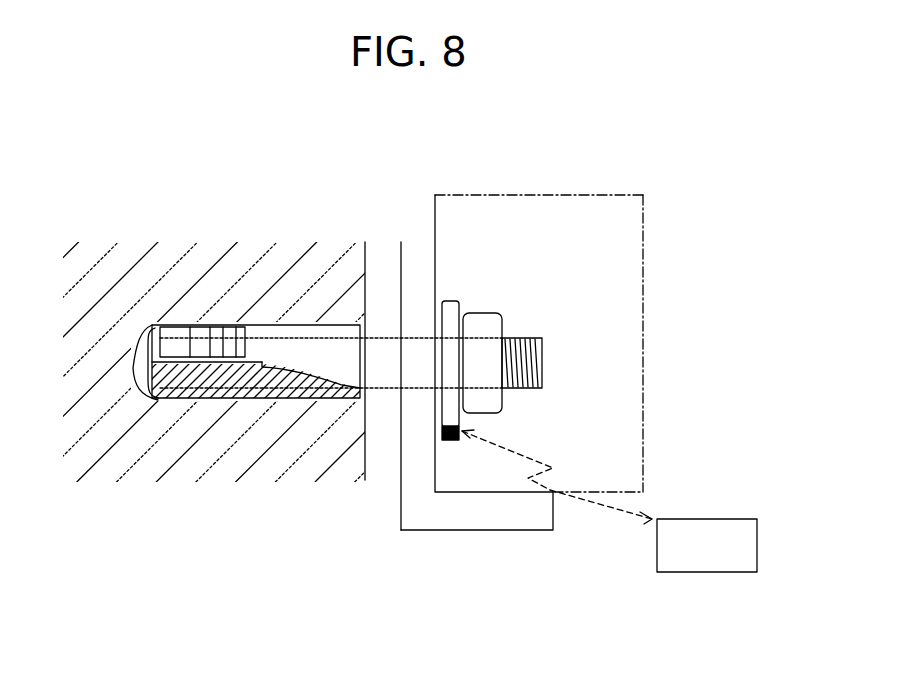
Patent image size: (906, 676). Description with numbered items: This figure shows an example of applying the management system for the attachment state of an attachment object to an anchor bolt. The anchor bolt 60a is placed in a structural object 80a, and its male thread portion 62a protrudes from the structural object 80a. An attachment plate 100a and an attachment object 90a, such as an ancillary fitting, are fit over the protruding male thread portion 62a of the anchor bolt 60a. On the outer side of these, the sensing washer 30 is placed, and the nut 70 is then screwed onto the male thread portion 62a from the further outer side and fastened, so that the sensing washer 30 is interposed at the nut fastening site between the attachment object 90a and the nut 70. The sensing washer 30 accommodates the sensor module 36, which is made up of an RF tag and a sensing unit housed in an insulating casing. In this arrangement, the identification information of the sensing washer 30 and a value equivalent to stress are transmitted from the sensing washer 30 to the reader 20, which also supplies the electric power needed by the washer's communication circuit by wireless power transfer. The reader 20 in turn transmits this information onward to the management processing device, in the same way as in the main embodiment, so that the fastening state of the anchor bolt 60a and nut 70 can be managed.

The reader 20 is at (713, 528).
The sensing washer 30 is at (447, 300).
The sensor module 36 is at (449, 442).
The anchor bolt 60a is at (252, 402).
The male thread portion 62a is at (543, 362).
The nut 70 is at (481, 314).
The structural object 80a is at (170, 288).
The attachment object 90a is at (436, 227).
The attachment plate 100a is at (376, 278).